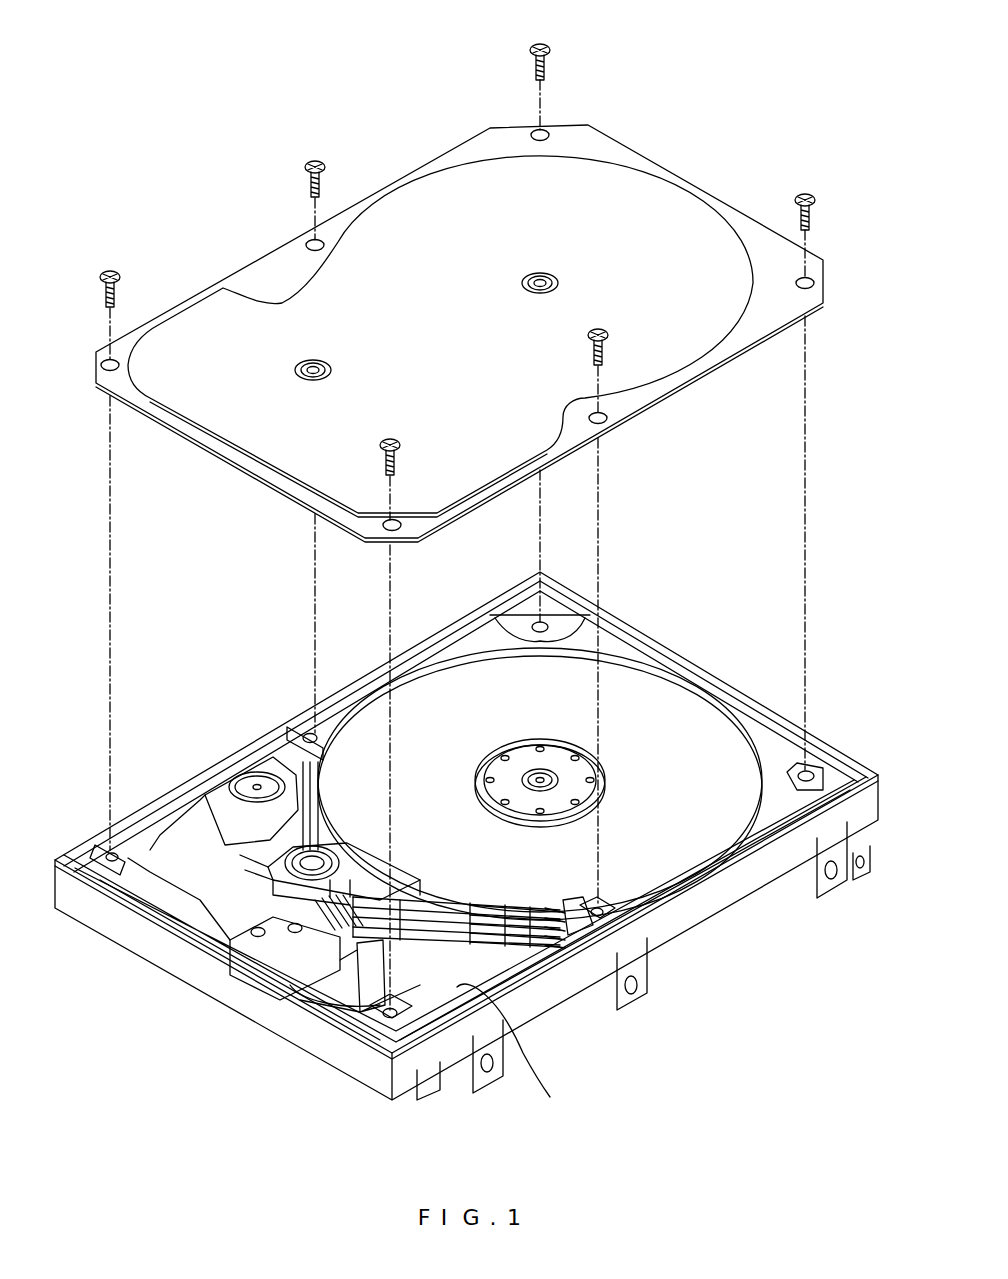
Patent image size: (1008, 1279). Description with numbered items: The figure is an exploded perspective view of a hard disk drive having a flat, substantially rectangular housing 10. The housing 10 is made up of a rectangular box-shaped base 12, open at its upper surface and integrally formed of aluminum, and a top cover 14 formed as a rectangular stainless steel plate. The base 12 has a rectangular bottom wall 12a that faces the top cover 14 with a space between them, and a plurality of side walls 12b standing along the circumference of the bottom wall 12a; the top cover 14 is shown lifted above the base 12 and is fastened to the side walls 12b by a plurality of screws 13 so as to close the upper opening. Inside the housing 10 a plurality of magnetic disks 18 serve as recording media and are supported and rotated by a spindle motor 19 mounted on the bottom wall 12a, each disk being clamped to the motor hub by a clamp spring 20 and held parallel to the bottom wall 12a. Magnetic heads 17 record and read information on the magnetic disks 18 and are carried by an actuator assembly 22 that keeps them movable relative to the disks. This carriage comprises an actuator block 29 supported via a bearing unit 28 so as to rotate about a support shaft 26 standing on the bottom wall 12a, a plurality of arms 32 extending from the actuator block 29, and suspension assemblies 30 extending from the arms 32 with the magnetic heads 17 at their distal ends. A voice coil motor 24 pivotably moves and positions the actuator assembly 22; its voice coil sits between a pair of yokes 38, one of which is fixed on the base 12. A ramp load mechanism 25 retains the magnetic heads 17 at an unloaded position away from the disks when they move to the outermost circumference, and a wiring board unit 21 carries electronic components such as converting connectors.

The housing 10 is at (822, 544).
The base 12 is at (667, 955).
The bottom wall 12a is at (515, 1052).
The side walls 12b is at (645, 632).
The screws 13 is at (112, 270).
The top cover 14 is at (657, 192).
The magnetic heads 17 is at (546, 906).
The magnetic disks 18 is at (664, 690).
The spindle motor 19 is at (538, 770).
The clamp spring 20 is at (492, 772).
The wiring board unit 21 is at (330, 997).
The actuator assembly 22 is at (425, 866).
The voice coil motor 24 is at (215, 890).
The ramp load mechanism 25 is at (575, 885).
The support shaft 26 is at (268, 862).
The bearing unit 28 is at (318, 850).
The actuator block 29 is at (330, 858).
The suspension assemblies 30 is at (502, 905).
The arms 32 is at (432, 895).
The yokes 38 is at (190, 830).